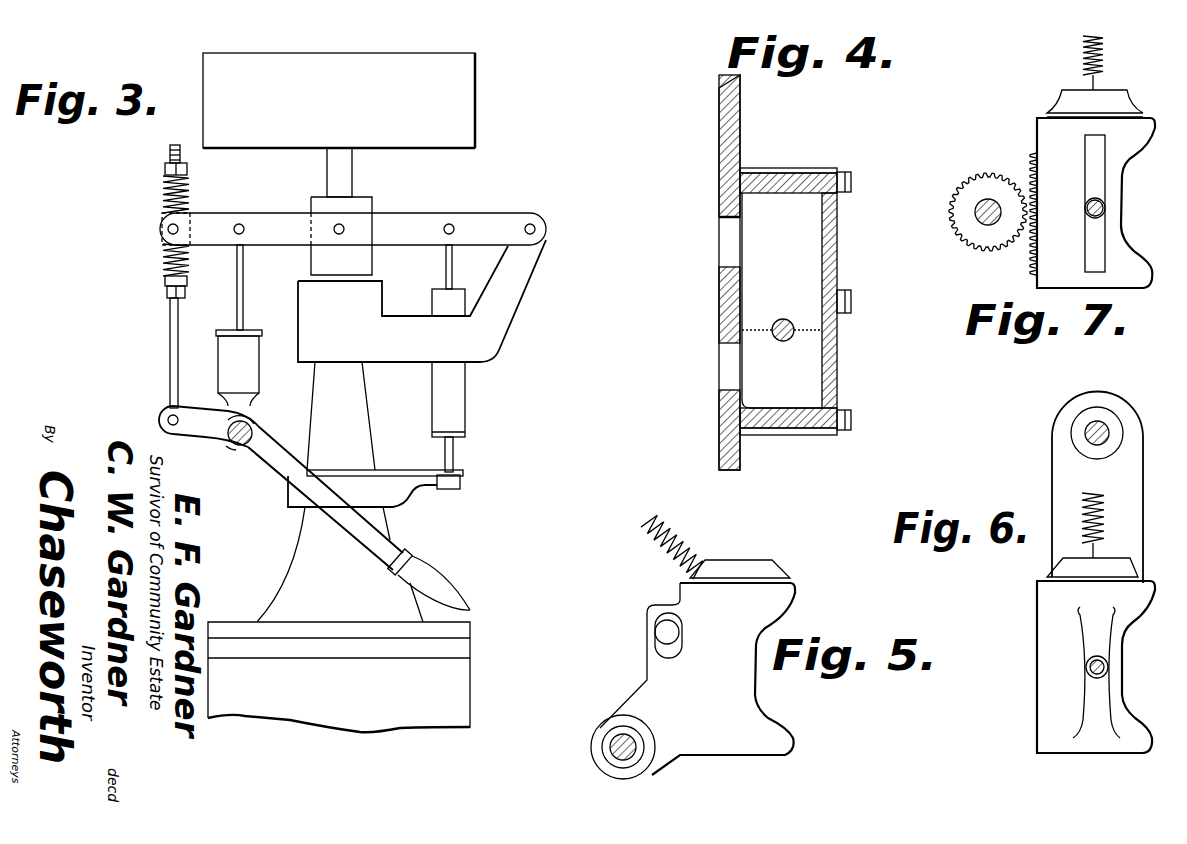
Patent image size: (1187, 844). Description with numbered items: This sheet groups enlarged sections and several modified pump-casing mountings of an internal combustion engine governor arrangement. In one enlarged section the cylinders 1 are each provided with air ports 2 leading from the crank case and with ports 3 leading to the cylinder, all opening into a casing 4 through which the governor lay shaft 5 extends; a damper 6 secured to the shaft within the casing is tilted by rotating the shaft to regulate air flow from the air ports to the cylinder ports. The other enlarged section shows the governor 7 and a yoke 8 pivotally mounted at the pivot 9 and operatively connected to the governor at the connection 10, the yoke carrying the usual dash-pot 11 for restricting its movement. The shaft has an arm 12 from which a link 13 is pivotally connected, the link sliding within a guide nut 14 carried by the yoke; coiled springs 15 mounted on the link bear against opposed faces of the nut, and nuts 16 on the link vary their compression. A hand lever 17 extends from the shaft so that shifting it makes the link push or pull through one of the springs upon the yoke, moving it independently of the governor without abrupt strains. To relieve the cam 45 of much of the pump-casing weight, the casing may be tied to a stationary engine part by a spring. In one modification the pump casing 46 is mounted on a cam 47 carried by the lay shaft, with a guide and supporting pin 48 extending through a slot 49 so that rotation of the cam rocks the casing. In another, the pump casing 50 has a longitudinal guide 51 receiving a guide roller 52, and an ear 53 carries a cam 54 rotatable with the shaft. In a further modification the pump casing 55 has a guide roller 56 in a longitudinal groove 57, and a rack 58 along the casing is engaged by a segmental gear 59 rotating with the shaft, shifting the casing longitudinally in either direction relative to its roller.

In FIG. 4, the cylinders 1 is at (741, 135).
In FIG. 4, the air ports 2 is at (722, 366).
In FIG. 4, the ports 3 is at (742, 250).
In FIG. 4, the casing 4 is at (840, 384).
In FIG. 3, the governor lay shaft 5 is at (240, 450).
In FIG. 4, the governor lay shaft 5 is at (782, 342).
In FIG. 7, the governor lay shaft 5 is at (976, 216).
In FIG. 6, the governor lay shaft 5 is at (1078, 426).
In FIG. 5, the governor lay shaft 5 is at (610, 745).
In FIG. 4, the damper 6 is at (803, 320).
In FIG. 3, the governor 7 is at (470, 116).
In FIG. 3, the yoke 8 is at (423, 222).
In FIG. 3, the pivot 9 is at (535, 225).
In FIG. 3, the governor connection 10 is at (342, 227).
In FIG. 3, the dash-pot 11 is at (256, 379).
In FIG. 3, the arm 12 is at (160, 414).
In FIG. 3, the link 13 is at (170, 349).
In FIG. 3, the guide nut 14 is at (160, 232).
In FIG. 3, the coiled springs 15 is at (190, 195).
In FIG. 5, the coiled springs 15 is at (645, 532).
In FIG. 3, the nuts 16 is at (164, 168).
In FIG. 3, the hand lever 17 is at (385, 548).
In FIG. 6, the cam 45 is at (1086, 538).
In FIG. 5, the pump casing 46 is at (697, 667).
In FIG. 5, the cam 47 is at (640, 760).
In FIG. 5, the guide and supporting pin 48 is at (663, 640).
In FIG. 5, the slot 49 is at (656, 617).
In FIG. 6, the pump casing 50 is at (1040, 663).
In FIG. 6, the longitudinal guide 51 is at (1108, 630).
In FIG. 6, the guide roller 52 is at (1098, 680).
In FIG. 6, the ear 53 is at (1066, 487).
In FIG. 6, the cam 54 is at (1081, 452).
In FIG. 7, the pump casing 55 is at (1133, 272).
In FIG. 7, the guide roller 56 is at (1105, 206).
In FIG. 7, the groove 57 is at (1105, 165).
In FIG. 7, the rack 58 is at (1028, 160).
In FIG. 7, the segmental gear 59 is at (985, 250).